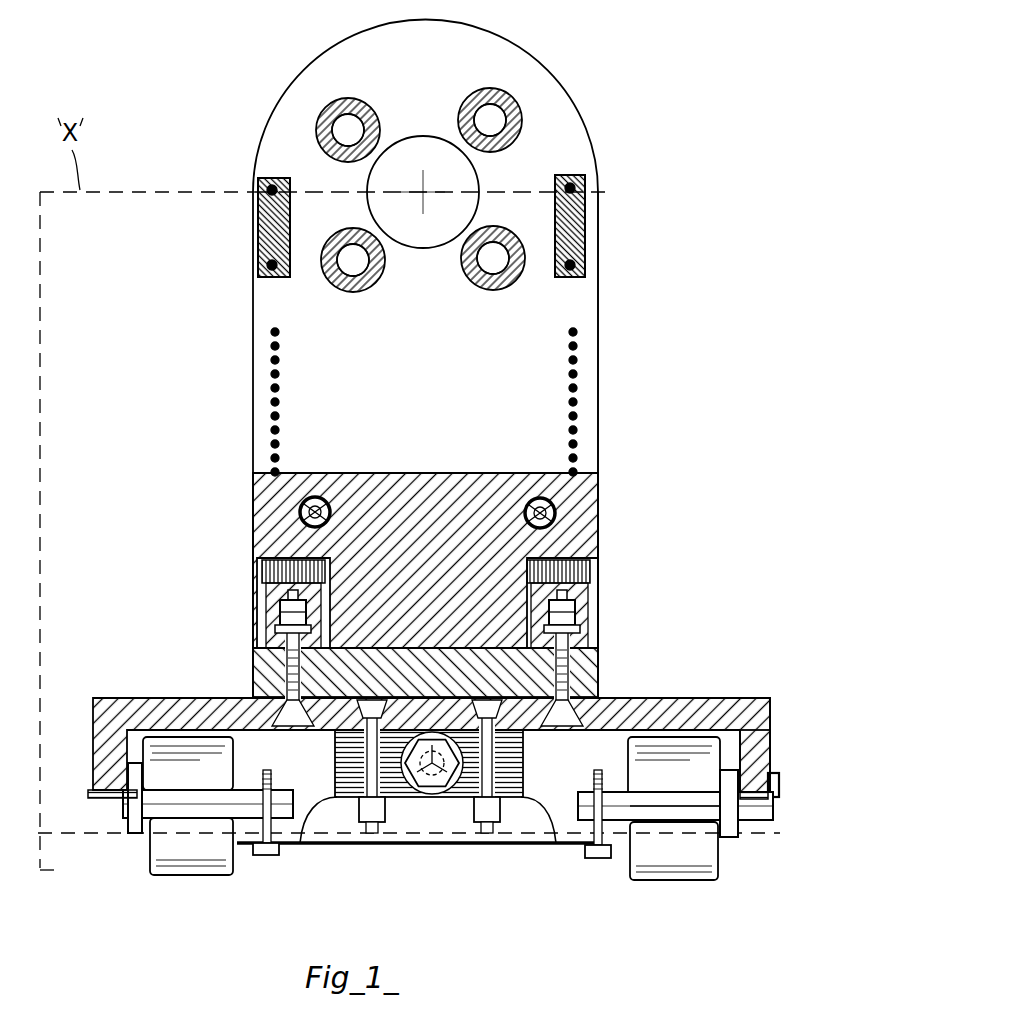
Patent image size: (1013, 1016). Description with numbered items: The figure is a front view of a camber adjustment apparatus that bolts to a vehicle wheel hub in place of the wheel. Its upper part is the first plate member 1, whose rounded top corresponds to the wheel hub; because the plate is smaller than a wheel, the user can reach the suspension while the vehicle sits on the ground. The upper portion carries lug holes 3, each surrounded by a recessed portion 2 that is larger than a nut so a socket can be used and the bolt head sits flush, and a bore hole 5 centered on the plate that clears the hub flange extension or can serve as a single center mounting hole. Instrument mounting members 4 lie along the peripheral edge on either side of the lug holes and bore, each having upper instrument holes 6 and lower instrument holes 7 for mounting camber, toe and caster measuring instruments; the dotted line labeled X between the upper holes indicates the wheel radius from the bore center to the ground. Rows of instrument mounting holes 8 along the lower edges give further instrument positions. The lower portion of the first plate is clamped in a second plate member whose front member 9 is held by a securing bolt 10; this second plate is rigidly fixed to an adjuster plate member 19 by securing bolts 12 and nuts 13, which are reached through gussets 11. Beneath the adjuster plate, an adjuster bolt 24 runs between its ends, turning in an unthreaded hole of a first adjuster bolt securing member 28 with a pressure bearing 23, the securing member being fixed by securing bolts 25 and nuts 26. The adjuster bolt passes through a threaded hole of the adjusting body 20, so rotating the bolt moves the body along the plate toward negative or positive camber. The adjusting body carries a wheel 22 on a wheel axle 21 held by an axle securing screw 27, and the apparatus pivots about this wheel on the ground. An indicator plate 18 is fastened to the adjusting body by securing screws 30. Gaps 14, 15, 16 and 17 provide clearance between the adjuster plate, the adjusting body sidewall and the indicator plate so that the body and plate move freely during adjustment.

The first plate member 1 is at (560, 122).
The recessed portion 2 is at (548, 133).
The lug holes 3 is at (492, 122).
The instrument mounting members 4 is at (593, 205).
The bore hole 5 is at (458, 200).
The upper instrument holes 6 is at (258, 180).
The lower instrument holes 7 is at (258, 272).
The instrument mounting holes 8 is at (576, 328).
The front member 9 is at (587, 500).
The securing bolt 10 is at (527, 522).
The gussets 11 is at (583, 565).
The securing bolts 12 is at (578, 692).
The nuts 13 is at (563, 618).
The gap 14 is at (697, 730).
The gap 15 is at (750, 750).
The gap 16 is at (779, 780).
The gap 17 is at (753, 800).
The indicator plate 18 is at (742, 800).
The adjuster plate member 19 is at (757, 718).
The adjusting body 20 is at (562, 786).
The wheel axle 21 is at (668, 812).
The wheel 22 is at (670, 853).
The pressure bearing 23 is at (436, 780).
The adjuster bolt 24 is at (472, 806).
The securing bolts 25 is at (383, 758).
The nuts 26 is at (514, 776).
The axle securing screw 27 is at (267, 855).
The first adjuster bolt securing member 28 is at (533, 822).
The securing screws 30 is at (124, 805).